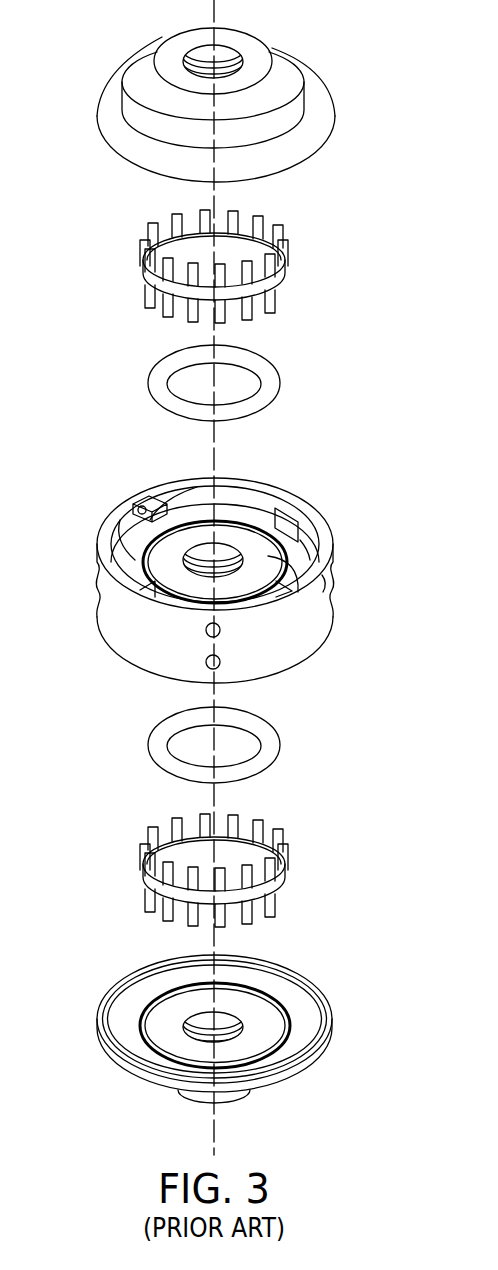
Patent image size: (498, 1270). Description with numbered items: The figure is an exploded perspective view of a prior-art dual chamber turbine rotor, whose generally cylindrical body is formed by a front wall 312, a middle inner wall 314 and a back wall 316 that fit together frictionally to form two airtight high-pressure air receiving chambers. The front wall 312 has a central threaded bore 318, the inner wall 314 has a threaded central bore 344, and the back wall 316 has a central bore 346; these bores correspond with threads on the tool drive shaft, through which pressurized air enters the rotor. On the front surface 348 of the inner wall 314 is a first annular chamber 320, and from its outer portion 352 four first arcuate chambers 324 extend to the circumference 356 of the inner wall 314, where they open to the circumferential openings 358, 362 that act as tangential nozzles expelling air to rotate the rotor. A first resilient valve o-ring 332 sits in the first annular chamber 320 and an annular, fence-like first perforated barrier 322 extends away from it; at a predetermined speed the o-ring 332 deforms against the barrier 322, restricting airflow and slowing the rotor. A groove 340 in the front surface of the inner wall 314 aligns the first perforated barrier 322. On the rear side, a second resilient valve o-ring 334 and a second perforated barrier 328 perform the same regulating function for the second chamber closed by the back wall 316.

The front wall 312 is at (317, 113).
The central threaded bore 318 is at (200, 53).
The first perforated barrier 322 is at (286, 258).
The first resilient valve o-ring 332 is at (162, 380).
The inner wall 314 is at (48, 568).
The first annular chamber 320 is at (258, 542).
The threaded central bore 344 is at (223, 568).
The groove 340 is at (196, 508).
The first circumferential opening 358 is at (134, 504).
The front surface 348 is at (315, 520).
The first arcuate chamber 324 is at (132, 538).
The circumference 356 is at (323, 583).
The circumferential opening 362 is at (205, 660).
The outer portion of the first annular chamber 352 is at (272, 560).
The second resilient valve o-ring 334 is at (162, 742).
The second perforated barrier 328 is at (286, 862).
The back wall 316 is at (102, 1035).
The central bore 346 is at (228, 1022).